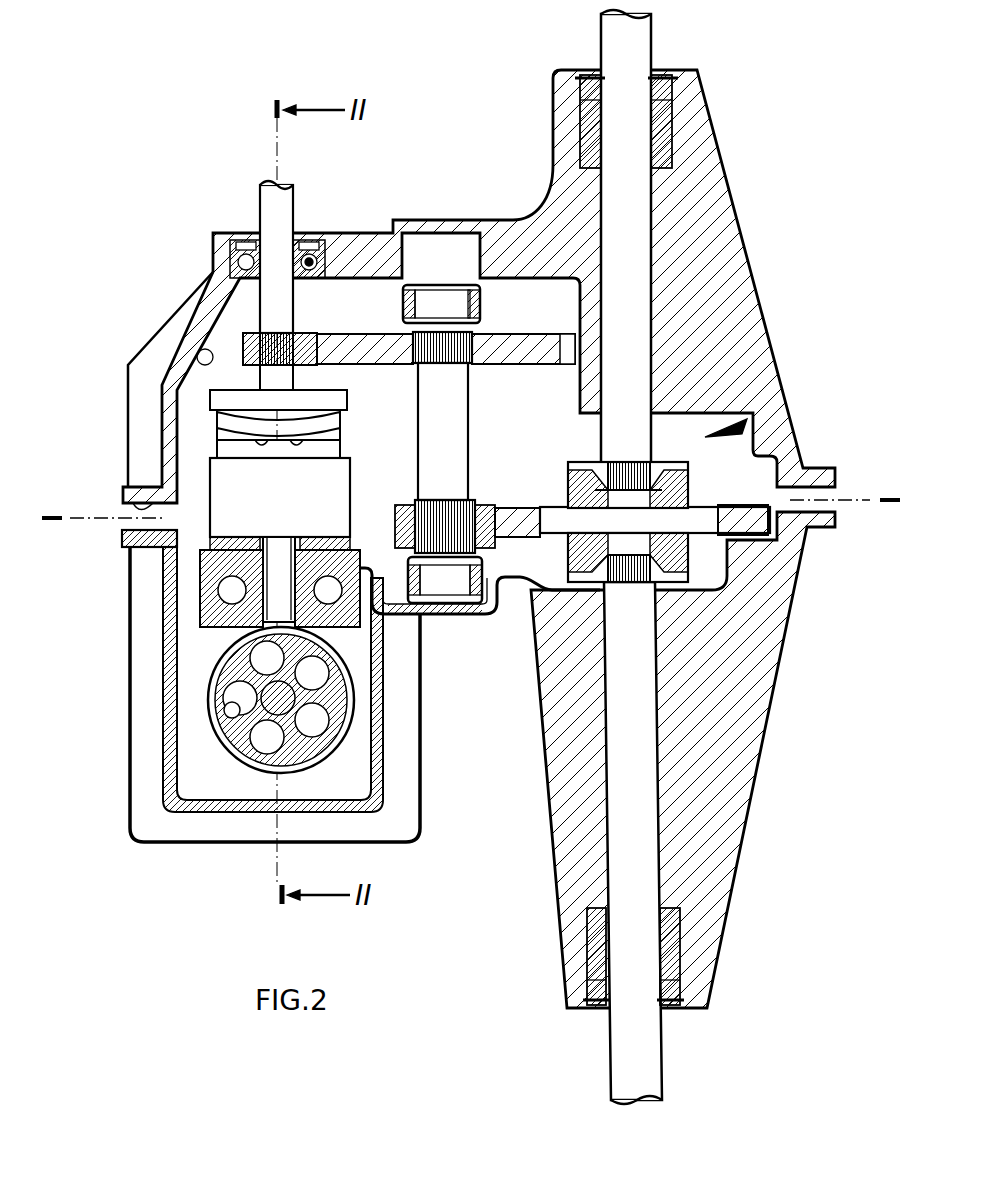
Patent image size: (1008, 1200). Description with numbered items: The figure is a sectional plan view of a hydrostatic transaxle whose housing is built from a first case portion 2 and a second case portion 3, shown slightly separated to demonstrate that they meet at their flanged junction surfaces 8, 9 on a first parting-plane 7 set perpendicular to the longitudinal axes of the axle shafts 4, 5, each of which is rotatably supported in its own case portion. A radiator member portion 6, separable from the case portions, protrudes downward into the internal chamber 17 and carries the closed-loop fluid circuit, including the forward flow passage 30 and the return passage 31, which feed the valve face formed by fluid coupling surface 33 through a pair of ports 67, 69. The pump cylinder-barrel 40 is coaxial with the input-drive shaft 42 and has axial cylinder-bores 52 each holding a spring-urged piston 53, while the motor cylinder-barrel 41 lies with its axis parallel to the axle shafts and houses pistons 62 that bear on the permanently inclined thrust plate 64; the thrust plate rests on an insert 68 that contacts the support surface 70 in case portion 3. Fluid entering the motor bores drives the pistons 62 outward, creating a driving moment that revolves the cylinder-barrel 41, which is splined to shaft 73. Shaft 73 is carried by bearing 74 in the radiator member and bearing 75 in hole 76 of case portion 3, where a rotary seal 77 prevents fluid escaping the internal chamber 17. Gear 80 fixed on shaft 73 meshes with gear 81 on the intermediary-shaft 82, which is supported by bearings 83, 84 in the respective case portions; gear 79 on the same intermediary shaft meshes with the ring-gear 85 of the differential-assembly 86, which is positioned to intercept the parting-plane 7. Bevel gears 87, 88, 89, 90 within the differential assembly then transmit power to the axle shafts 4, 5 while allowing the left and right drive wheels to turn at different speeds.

The first case portion 2 is at (720, 782).
The second case portion 3 is at (720, 272).
The axle shaft 4 is at (645, 1072).
The axle shaft 5 is at (635, 60).
The radiator member portion 6 is at (165, 663).
The first parting-plane 7 is at (87, 520).
The flanged junction surface 8 is at (135, 525).
The flanged junction surface 9 is at (137, 508).
The internal chamber 17 is at (520, 400).
The flow passage 30 is at (227, 590).
The return passage 31 is at (330, 600).
The fluid coupling surface 33 is at (313, 547).
The pump cylinder-barrel 40 is at (318, 770).
The motor cylinder-barrel 41 is at (256, 494).
The input-drive shaft 42 is at (298, 703).
The cylinder-bore 52 is at (235, 712).
The piston 53 is at (258, 755).
The piston 62 is at (228, 450).
The thrust plate 64 is at (335, 420).
The port 67 is at (233, 543).
The insert 68 is at (343, 400).
The port 69 is at (322, 552).
The support surface 70 is at (180, 382).
The shaft 73 is at (290, 205).
The bearing 74 is at (290, 560).
The bearing 75 is at (312, 262).
The hole 76 is at (240, 248).
The rotary seal 77 is at (312, 240).
The gear 79 is at (483, 512).
The gear 80 is at (300, 345).
The gear 81 is at (375, 350).
The intermediary-shaft 82 is at (458, 435).
The bearing 83 is at (478, 604).
The bearing 84 is at (483, 310).
The ring-gear 85 is at (520, 520).
The differential-assembly 86 is at (742, 420).
The bevel gear 87 is at (562, 592).
The bevel gear 88 is at (588, 462).
The bevel gear 89 is at (690, 497).
The bevel gear 90 is at (672, 572).